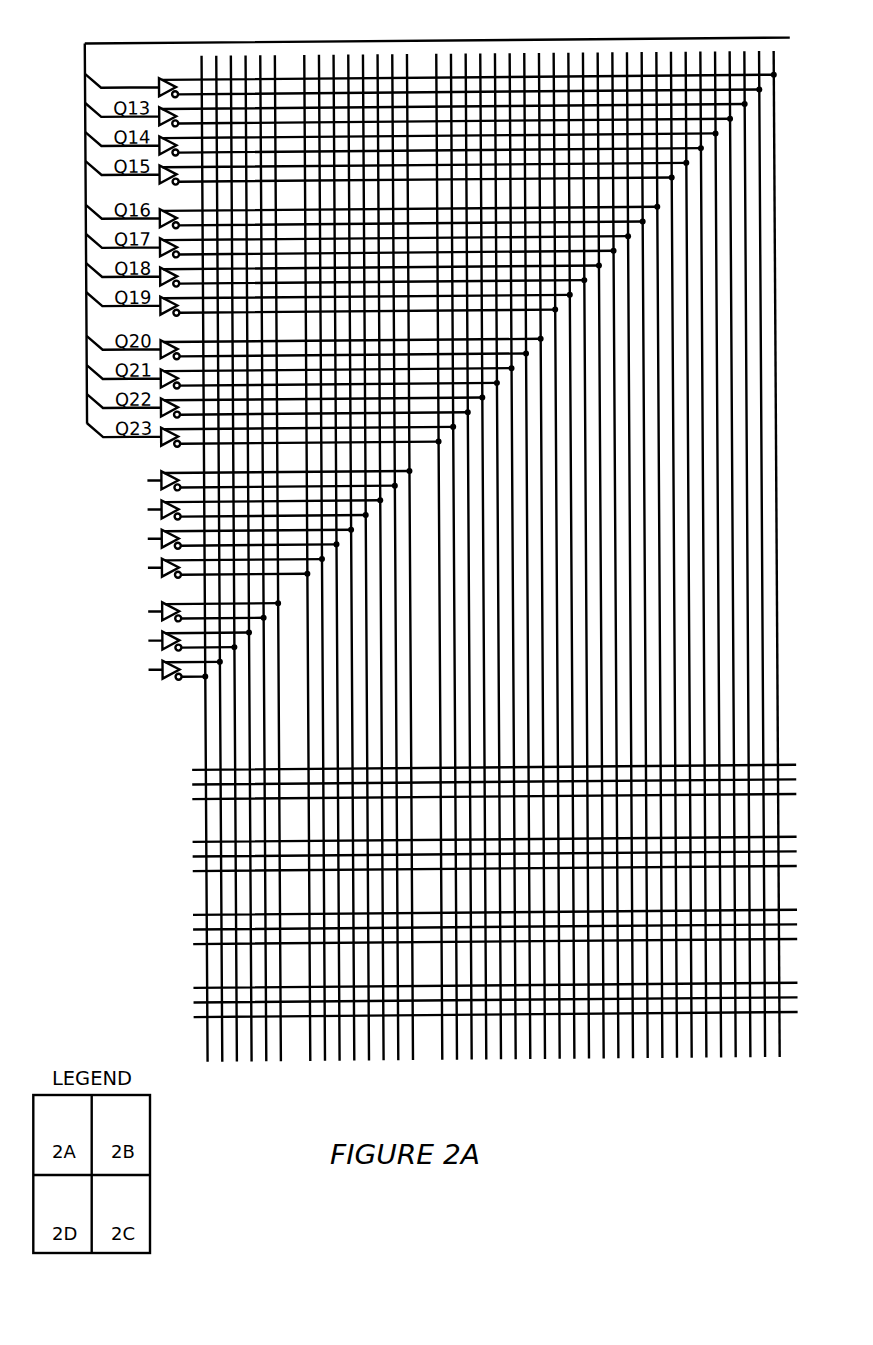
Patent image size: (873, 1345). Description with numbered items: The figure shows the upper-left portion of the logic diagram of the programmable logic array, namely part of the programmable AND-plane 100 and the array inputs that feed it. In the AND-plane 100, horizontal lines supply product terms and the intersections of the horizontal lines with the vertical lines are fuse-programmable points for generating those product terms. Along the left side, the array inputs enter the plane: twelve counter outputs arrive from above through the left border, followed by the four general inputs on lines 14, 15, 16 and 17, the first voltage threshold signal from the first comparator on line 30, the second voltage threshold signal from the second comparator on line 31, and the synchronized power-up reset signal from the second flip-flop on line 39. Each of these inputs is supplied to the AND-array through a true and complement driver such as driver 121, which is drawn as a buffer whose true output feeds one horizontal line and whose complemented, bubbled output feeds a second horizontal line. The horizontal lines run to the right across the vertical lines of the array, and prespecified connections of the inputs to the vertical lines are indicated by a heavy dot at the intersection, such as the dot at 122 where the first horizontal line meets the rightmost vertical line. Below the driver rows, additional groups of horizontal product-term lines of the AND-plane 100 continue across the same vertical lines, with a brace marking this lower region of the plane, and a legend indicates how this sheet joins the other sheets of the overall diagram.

The line for input I0 14 is at (156, 470).
The line for input I1 15 is at (156, 500).
The line for input I2 16 is at (156, 530).
The line for input I3 17 is at (156, 559).
The line for LOWVOLT0 30 is at (153, 603).
The line for LOWVOLT1 31 is at (150, 642).
The line for SYNCPU 39 is at (150, 671).
The programmable AND-plane 100 is at (164, 760).
The true and complement driver 121 is at (163, 76).
The heavy dot connection 122 is at (773, 76).